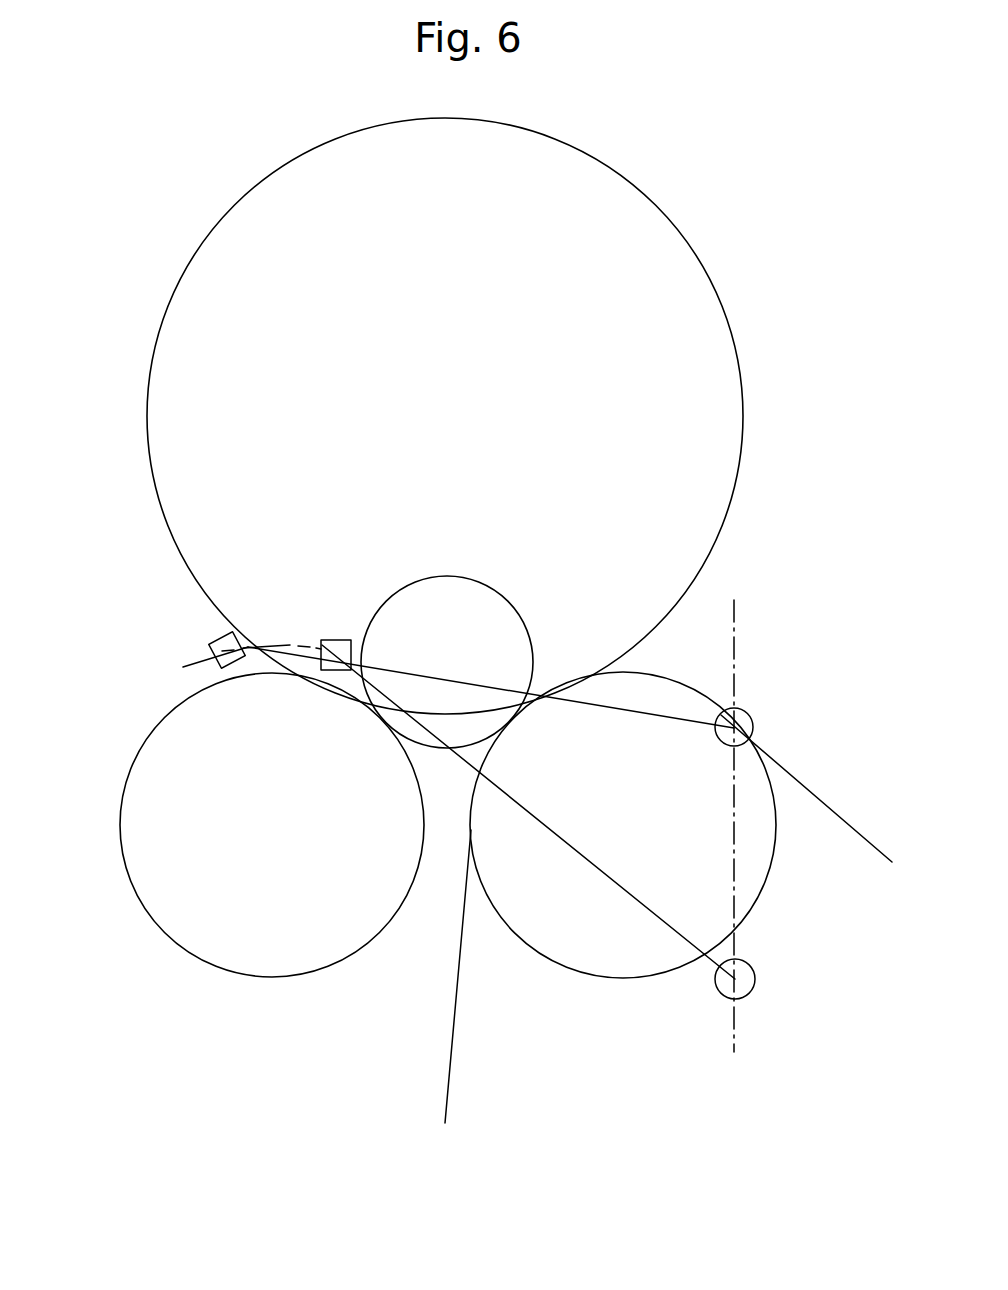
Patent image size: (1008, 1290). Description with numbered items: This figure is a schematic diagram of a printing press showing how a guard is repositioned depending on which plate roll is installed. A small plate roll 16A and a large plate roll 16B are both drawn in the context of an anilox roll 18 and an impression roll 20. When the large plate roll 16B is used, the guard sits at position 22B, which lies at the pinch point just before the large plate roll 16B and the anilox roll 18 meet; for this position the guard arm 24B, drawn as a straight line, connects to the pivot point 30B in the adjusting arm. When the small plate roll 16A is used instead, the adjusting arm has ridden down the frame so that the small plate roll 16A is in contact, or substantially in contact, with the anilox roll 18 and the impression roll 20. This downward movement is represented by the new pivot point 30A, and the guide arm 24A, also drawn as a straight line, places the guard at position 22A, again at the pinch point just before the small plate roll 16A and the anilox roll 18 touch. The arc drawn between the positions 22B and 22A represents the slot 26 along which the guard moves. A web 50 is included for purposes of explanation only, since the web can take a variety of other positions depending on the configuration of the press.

The large plate roll 16B is at (164, 373).
The small plate roll 16A is at (523, 624).
The anilox roll 18 is at (122, 792).
The impression roll 20 is at (608, 978).
The guard position for small plate roll 22A is at (338, 640).
The guard position for large plate roll 22B is at (216, 637).
The guide arm 24A is at (581, 855).
The guard arm 24B is at (581, 704).
The slot 26 is at (294, 641).
The pivot point 30A is at (753, 970).
The pivot point 30B is at (752, 718).
The web 50 is at (449, 1050).